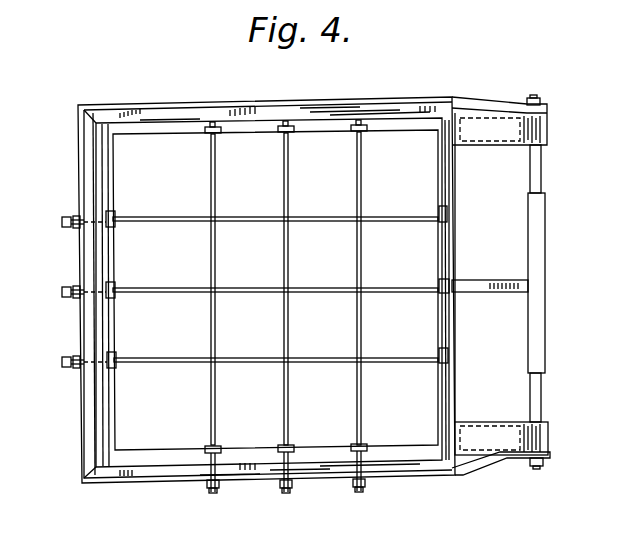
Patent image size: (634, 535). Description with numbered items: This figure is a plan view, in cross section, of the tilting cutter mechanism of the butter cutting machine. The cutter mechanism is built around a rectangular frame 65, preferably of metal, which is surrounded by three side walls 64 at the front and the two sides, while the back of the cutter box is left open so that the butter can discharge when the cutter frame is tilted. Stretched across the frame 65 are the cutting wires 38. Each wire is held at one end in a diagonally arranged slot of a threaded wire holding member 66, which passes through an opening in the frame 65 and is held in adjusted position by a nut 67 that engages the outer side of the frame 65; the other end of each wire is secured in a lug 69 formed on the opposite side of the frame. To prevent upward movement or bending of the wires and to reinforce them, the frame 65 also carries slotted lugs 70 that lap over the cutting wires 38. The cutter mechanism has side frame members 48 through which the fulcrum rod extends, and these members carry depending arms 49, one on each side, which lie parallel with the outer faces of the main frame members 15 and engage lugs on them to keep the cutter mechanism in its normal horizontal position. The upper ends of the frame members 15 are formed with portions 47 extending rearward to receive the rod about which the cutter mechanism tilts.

The frame member 15 is at (548, 132).
The cutting wire 38 is at (356, 184).
The portion 47 is at (547, 145).
The side frame member 48 is at (424, 481).
The depending arm 49 is at (545, 105).
The side wall 64 is at (170, 117).
The rectangular frame 65 is at (438, 149).
The threaded wire holding member 66 is at (64, 235).
The nut 67 is at (70, 217).
The lug 69 is at (221, 127).
The lug 70 is at (113, 230).